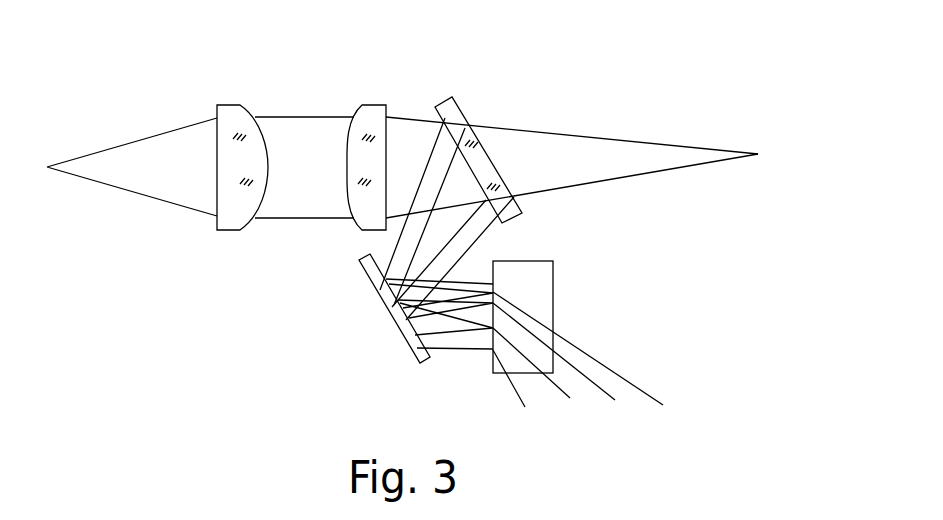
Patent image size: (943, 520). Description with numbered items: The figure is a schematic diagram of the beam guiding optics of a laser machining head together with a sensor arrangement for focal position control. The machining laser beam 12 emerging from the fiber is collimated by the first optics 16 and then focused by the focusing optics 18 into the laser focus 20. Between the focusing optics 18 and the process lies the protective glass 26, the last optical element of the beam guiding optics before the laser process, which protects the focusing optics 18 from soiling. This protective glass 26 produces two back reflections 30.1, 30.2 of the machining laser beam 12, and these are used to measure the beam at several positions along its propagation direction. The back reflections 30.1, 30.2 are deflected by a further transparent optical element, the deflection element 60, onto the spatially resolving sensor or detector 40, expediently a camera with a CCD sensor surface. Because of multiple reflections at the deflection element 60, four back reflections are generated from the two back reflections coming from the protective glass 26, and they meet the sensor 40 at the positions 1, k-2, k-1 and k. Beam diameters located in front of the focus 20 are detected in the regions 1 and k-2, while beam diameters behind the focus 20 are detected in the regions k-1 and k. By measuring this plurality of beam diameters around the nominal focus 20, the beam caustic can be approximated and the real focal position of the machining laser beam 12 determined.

The machining laser beam 12 is at (533, 143).
The first optics 16 is at (231, 117).
The focusing optics 18 is at (372, 112).
The laser focus 20 is at (757, 150).
The protective glass 26 is at (445, 108).
The back reflection 30.1 is at (463, 245).
The back reflection 30.2 is at (413, 233).
The spatially resolving sensor or detector 40 is at (540, 293).
The deflection element 60 is at (407, 353).
The position k is at (516, 390).
The position k-1 is at (540, 377).
The position k-2 is at (567, 364).
The position 1 is at (584, 357).